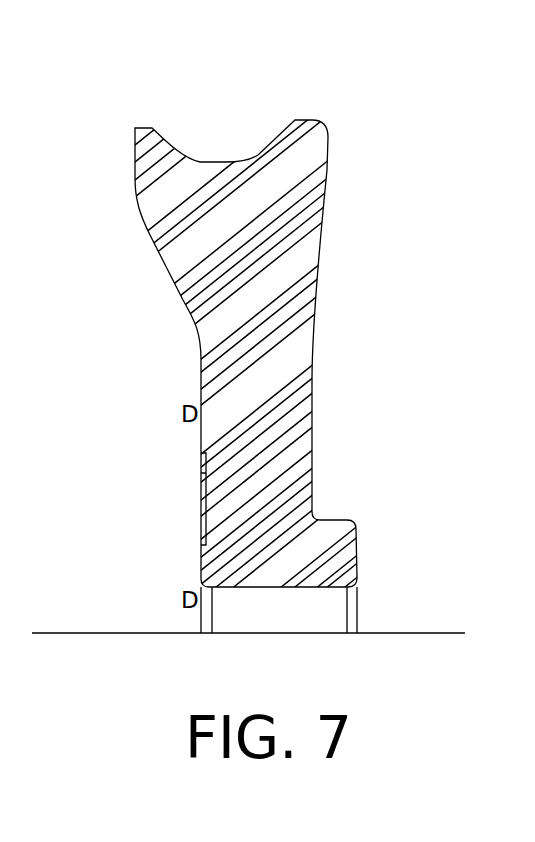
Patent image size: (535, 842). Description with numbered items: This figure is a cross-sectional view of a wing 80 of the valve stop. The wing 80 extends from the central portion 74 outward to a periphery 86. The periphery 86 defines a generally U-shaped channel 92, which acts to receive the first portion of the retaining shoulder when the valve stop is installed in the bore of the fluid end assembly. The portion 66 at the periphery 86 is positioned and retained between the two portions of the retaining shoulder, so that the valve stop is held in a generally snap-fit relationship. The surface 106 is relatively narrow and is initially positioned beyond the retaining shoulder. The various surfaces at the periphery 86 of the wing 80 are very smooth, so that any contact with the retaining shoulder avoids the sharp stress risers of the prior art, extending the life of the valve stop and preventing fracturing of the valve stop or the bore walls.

The surface 106 is at (147, 128).
The generally U-shaped channel 92 is at (218, 163).
The portion 66 is at (295, 120).
The periphery 86 is at (310, 120).
The wing 80 is at (312, 363).
The central portion 74 is at (342, 518).